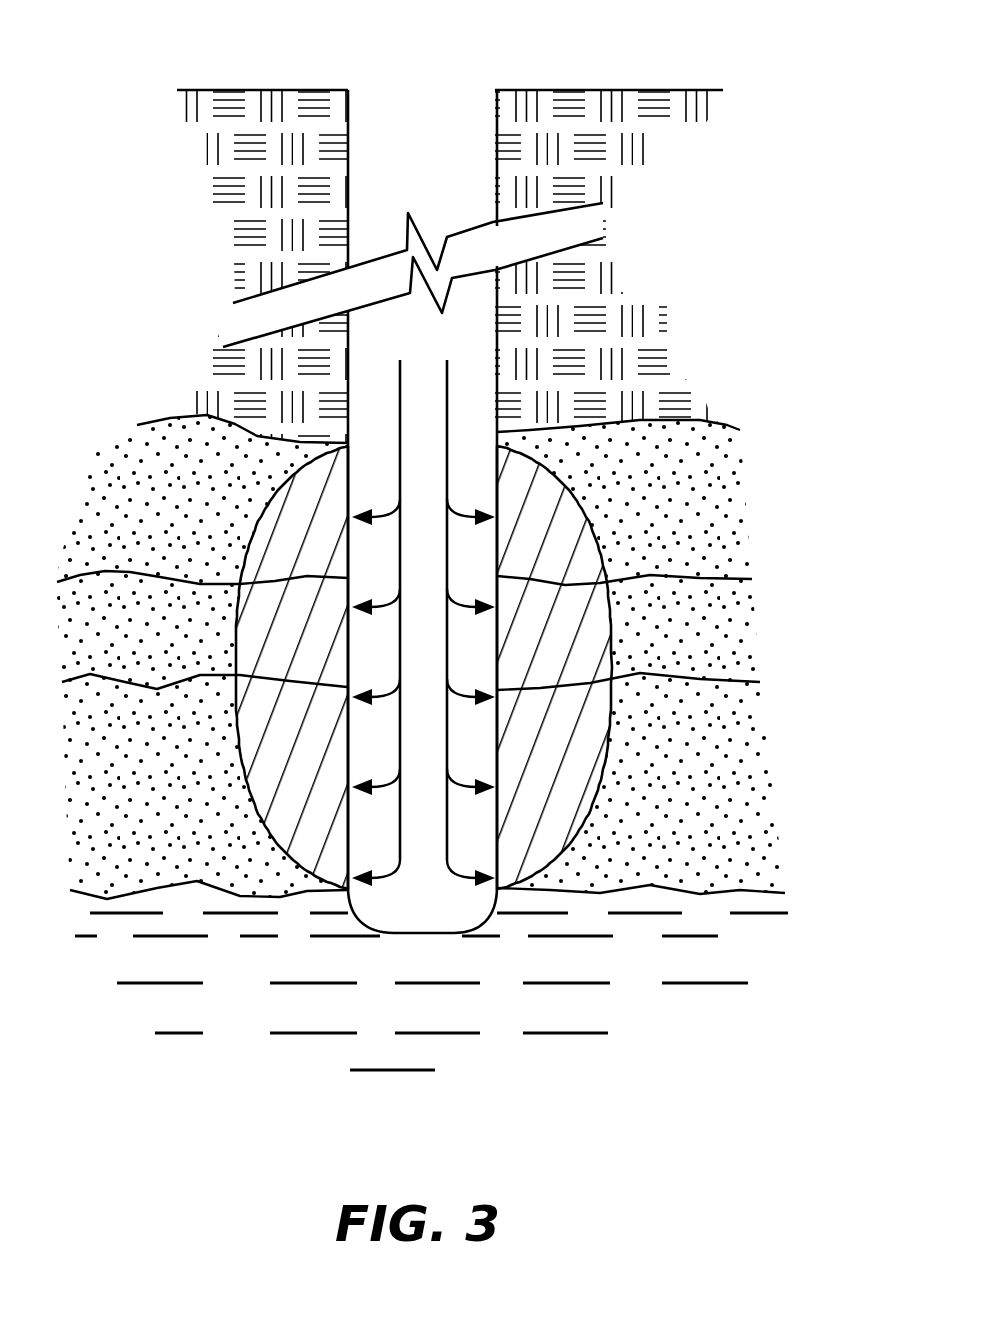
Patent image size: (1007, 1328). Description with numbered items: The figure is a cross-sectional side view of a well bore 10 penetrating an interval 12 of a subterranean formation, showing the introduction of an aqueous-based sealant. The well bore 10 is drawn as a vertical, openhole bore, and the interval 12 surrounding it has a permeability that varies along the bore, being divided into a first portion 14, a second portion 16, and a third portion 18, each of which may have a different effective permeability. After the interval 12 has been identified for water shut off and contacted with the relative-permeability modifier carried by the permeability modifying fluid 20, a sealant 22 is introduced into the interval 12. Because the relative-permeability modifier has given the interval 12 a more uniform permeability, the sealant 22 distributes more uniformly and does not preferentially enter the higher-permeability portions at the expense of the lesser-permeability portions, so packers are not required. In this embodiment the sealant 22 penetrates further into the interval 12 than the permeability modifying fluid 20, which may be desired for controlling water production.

The well bore 10 is at (493, 112).
The interval 12 is at (805, 481).
The first portion 14 is at (205, 522).
The second portion 16 is at (175, 653).
The third portion 18 is at (190, 793).
The permeability modifying fluid 20 is at (398, 440).
The sealant 22 is at (309, 866).